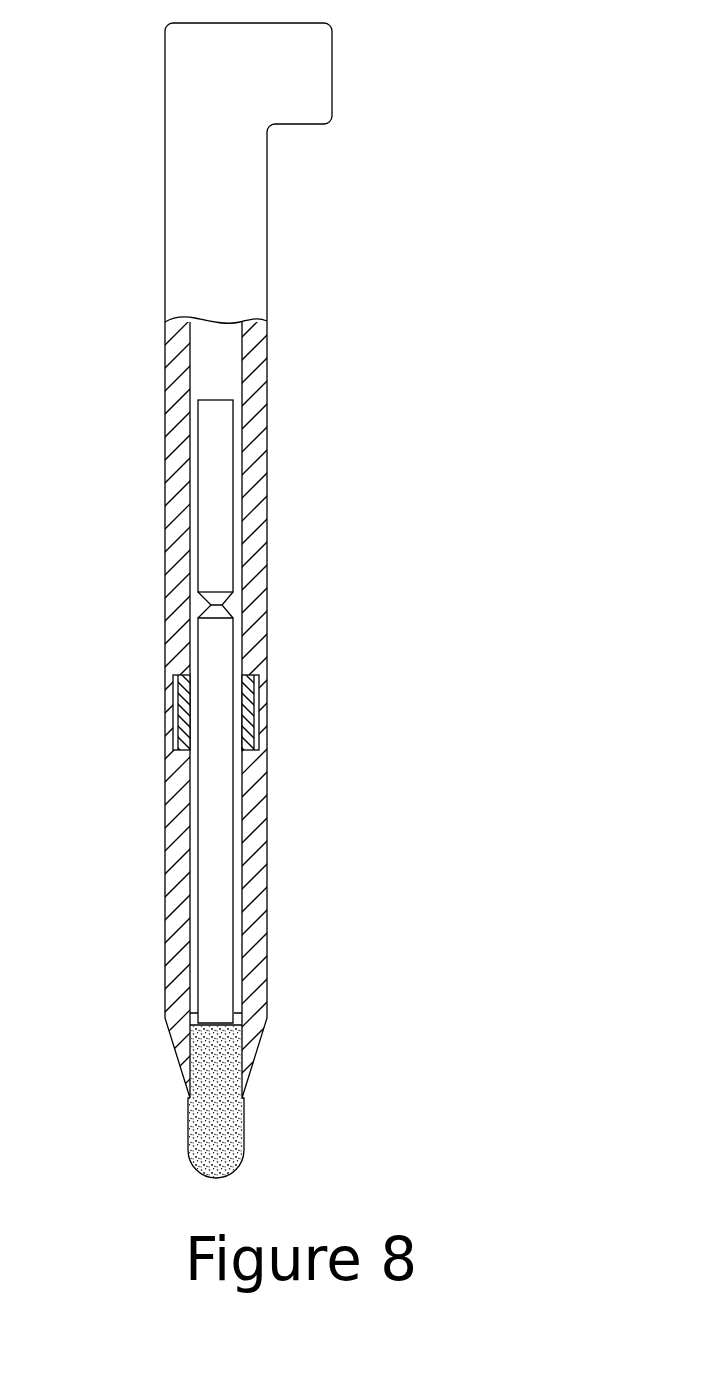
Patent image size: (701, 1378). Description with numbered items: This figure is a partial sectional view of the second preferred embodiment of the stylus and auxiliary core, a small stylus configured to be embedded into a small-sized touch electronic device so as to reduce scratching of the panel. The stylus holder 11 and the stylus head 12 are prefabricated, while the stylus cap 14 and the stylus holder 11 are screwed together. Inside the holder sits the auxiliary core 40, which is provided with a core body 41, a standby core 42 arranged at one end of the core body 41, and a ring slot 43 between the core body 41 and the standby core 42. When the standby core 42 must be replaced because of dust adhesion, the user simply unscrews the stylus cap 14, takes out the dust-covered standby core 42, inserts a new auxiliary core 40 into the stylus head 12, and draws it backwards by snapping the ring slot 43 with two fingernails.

The stylus holder 11 is at (255, 833).
The stylus head 12 is at (250, 1038).
The stylus cap 14 is at (244, 233).
The auxiliary core 40 is at (216, 674).
The core body 41 is at (220, 490).
The standby core 42 is at (217, 852).
The ring slot 43 is at (228, 605).